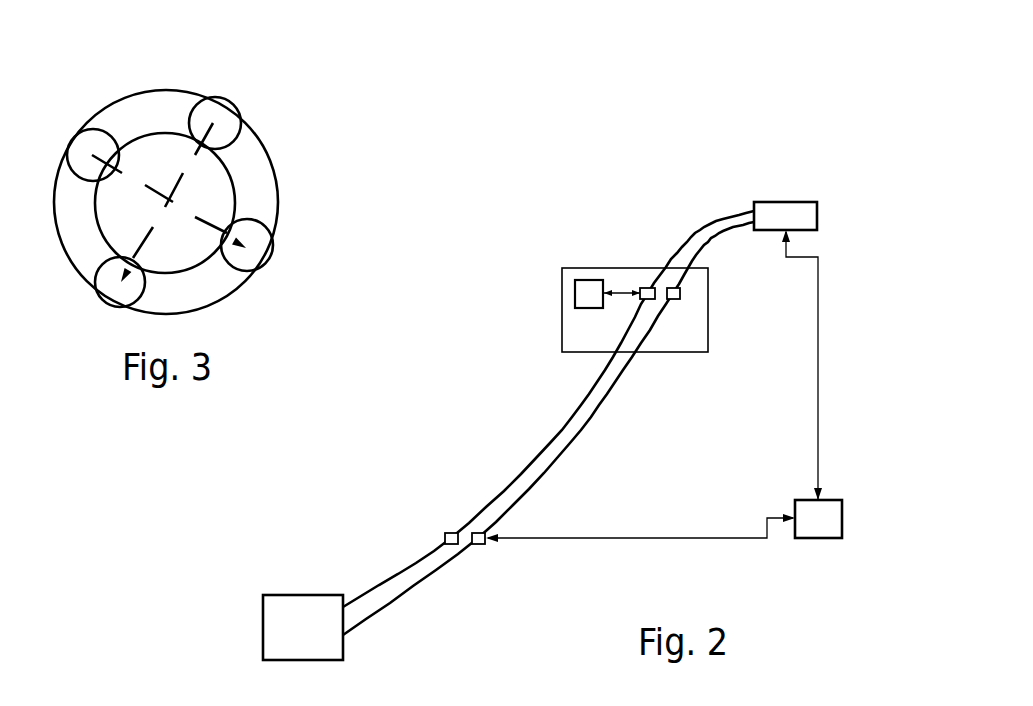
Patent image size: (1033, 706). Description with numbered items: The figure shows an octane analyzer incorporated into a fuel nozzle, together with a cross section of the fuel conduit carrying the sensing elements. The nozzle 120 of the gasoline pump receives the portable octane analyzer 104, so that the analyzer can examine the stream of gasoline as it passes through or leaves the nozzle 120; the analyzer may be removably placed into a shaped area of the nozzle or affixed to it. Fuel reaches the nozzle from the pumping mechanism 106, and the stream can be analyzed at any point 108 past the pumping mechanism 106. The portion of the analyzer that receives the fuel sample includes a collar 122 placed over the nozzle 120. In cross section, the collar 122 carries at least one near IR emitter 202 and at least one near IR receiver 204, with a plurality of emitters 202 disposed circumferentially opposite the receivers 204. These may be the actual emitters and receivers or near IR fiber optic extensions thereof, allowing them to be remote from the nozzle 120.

In FIG. 2, the portable octane analyzer 104 is at (577, 290).
In FIG. 2, the pumping mechanism 106 is at (263, 625).
In FIG. 2, the point past the pumping mechanism 108 is at (650, 287).
In FIG. 2, the nozzle 120 is at (708, 225).
In FIG. 2, the collar 122 is at (795, 202).
In FIG. 3, the near IR emitter 202 is at (91, 128).
In FIG. 3, the near IR receiver 204 is at (223, 98).